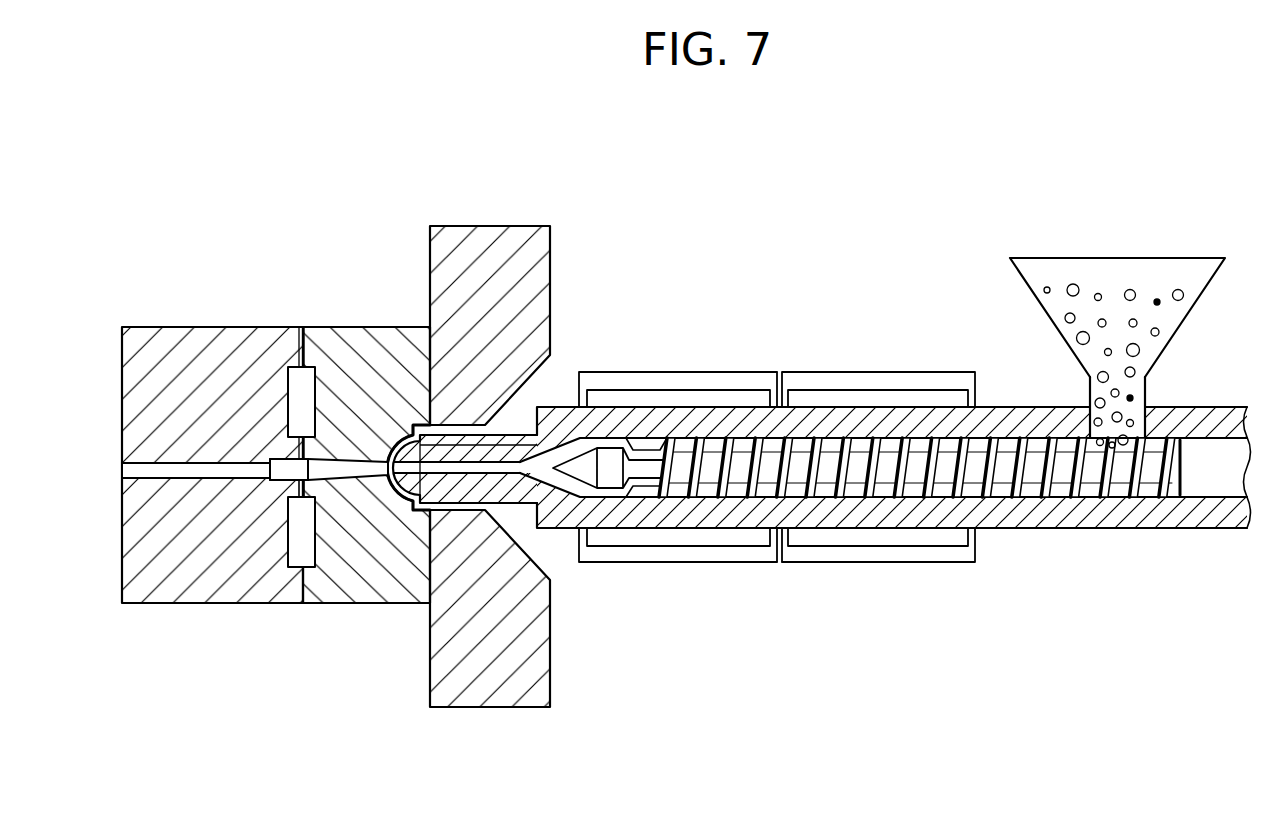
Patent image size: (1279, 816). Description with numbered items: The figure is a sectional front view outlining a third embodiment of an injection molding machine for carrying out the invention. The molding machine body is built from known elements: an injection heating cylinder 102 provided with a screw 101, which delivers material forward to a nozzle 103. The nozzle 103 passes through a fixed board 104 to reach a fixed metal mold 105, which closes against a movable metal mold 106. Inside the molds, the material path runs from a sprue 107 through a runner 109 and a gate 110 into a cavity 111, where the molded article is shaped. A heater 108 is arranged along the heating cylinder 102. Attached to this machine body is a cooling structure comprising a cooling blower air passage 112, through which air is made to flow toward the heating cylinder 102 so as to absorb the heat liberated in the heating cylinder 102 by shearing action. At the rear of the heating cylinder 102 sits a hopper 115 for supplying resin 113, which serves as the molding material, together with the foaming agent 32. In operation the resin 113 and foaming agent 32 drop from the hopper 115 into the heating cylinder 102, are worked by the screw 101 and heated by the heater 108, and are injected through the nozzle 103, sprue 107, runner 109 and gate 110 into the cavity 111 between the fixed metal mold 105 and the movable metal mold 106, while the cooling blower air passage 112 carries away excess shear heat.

The screw 101 is at (866, 539).
The injection heating cylinder 102 is at (885, 495).
The nozzle 103 is at (516, 409).
The fixed board 104 is at (490, 508).
The fixed metal mold 105 is at (366, 510).
The movable metal mold 106 is at (212, 510).
The sprue 107 is at (269, 378).
The heater 108 is at (777, 468).
The runner 109 is at (176, 541).
The gate 110 is at (239, 376).
The cavity 111 is at (288, 361).
The cooling blower air passage 112 is at (871, 470).
The resin 113 is at (1058, 240).
The hopper 115 is at (1118, 277).
The foaming agent 32 is at (1170, 366).